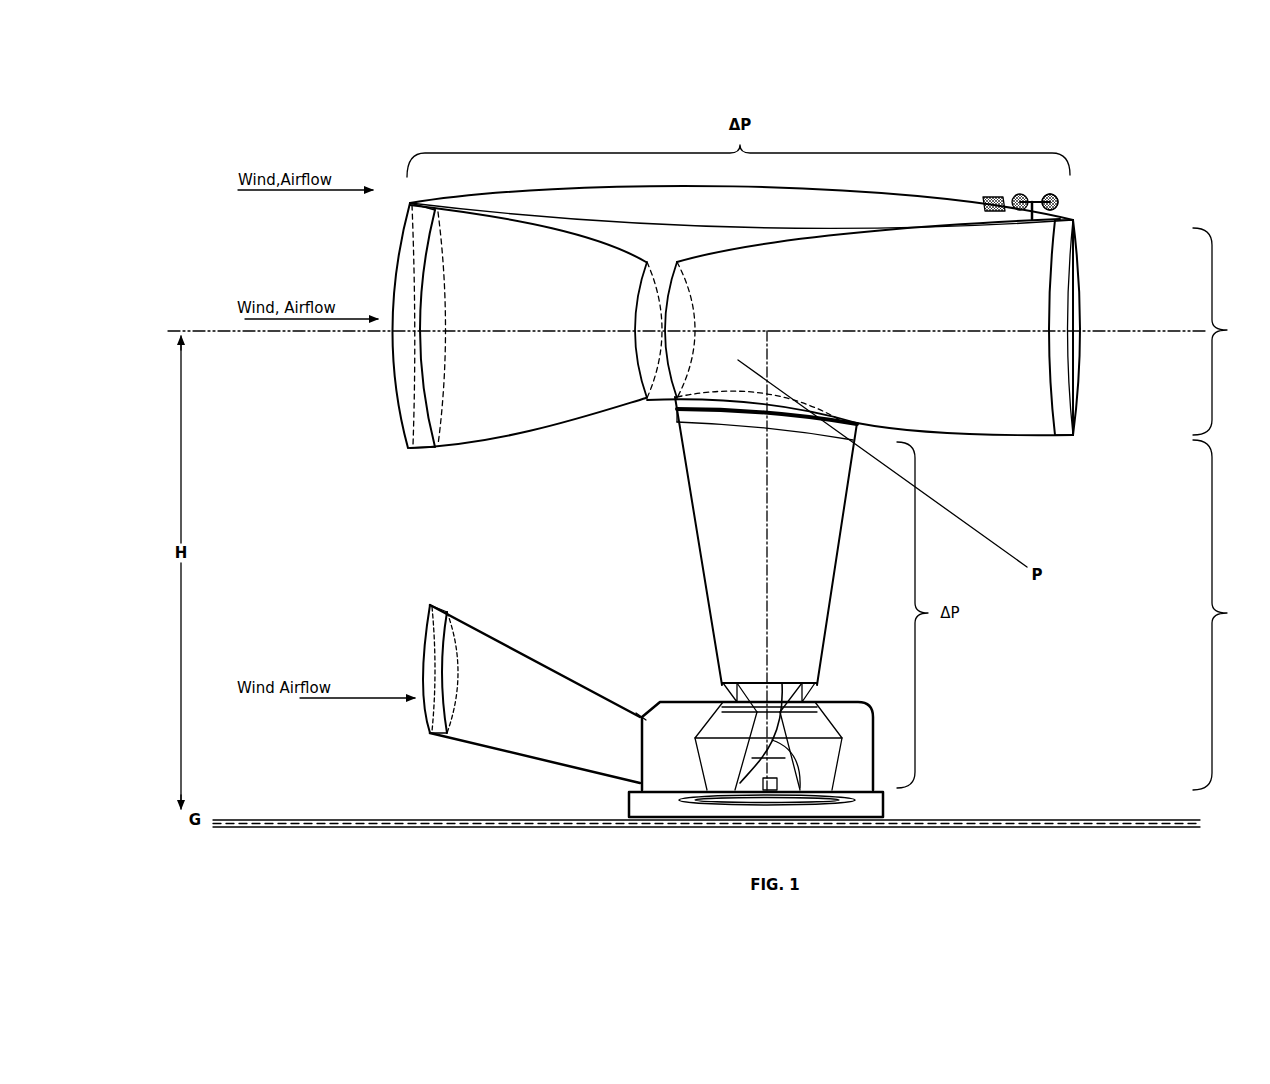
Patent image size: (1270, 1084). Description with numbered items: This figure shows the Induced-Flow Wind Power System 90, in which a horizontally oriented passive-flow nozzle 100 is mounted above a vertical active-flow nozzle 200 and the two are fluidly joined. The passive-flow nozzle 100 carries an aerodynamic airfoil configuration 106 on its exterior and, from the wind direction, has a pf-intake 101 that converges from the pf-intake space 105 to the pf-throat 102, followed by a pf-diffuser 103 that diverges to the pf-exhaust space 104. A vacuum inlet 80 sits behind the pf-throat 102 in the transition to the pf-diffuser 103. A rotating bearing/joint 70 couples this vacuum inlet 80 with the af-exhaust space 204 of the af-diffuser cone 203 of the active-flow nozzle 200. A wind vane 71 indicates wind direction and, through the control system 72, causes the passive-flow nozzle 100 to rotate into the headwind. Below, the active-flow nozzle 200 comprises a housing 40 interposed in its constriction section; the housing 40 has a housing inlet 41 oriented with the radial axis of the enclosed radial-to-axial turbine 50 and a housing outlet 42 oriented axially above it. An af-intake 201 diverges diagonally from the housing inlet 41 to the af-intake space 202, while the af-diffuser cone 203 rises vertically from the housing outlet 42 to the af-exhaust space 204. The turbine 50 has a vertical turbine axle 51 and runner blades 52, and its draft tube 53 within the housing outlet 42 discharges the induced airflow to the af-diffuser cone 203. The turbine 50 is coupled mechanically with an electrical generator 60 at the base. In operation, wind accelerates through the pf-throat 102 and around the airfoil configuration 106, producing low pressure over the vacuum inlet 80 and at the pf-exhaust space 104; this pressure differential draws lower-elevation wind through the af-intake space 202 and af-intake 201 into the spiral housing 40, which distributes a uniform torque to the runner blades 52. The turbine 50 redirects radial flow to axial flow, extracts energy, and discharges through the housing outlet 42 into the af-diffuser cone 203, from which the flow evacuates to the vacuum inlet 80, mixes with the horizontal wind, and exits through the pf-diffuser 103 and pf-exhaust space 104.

The Induced-Flow Wind Power System 90 is at (340, 156).
The passive-flow nozzle 100 is at (792, 342).
The pf-intake 101 is at (480, 283).
The pf-throat 102 is at (647, 358).
The pf-diffuser 103 is at (977, 275).
The pf-exhaust space 104 is at (1073, 303).
The pf-intake space 105 is at (393, 297).
The aerodynamic airfoil configuration 106 is at (813, 205).
The rotating bearing/joint 70 is at (748, 415).
The wind vane 71 is at (1062, 202).
The control system 72 is at (995, 197).
The vacuum inlet 80 is at (860, 425).
The active-flow nozzle 200 is at (792, 607).
The af-intake 201 is at (510, 690).
The af-intake space 202 is at (437, 665).
The af-diffuser cone 203 is at (740, 577).
The af-exhaust space 204 is at (727, 418).
The housing 40 is at (660, 697).
The housing inlet 41 is at (640, 717).
The housing outlet 42 is at (817, 693).
The radial-to-axial turbine 50 is at (847, 738).
The turbine axle 51 is at (772, 768).
The runner blades 52 is at (770, 746).
The draft tube 53 is at (810, 726).
The electrical generator 60 is at (822, 799).